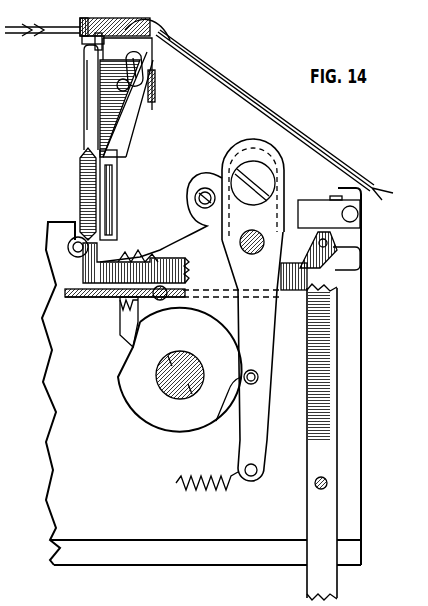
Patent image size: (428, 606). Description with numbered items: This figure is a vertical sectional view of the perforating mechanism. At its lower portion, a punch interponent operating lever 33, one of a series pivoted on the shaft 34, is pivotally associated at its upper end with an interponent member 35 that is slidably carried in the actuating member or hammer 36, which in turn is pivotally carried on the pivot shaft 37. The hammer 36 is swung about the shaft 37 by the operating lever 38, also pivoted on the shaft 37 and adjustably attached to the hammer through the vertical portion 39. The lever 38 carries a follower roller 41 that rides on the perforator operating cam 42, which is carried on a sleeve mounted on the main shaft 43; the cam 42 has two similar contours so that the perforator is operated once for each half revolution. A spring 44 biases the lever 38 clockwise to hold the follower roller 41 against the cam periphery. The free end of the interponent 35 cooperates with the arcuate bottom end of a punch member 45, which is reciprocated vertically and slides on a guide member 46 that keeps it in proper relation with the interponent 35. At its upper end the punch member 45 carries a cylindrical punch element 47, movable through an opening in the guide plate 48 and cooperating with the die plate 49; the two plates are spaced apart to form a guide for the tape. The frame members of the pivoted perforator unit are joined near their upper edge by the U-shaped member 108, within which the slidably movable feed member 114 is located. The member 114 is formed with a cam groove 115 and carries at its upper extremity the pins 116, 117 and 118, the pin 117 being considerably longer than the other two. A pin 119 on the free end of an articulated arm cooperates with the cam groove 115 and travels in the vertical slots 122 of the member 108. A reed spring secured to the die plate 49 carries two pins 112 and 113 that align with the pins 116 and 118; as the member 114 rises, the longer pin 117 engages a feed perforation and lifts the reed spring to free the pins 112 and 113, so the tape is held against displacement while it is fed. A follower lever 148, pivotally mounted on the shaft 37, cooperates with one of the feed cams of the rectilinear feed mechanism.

The punch interponent operating lever 33 is at (314, 515).
The shaft 34 is at (314, 485).
The interponent member 35 is at (90, 273).
The actuating member or hammer 36 is at (80, 300).
The pivot shaft 37 is at (257, 232).
The operating lever 38 is at (262, 433).
The vertical portion 39 is at (268, 173).
The follower roller 41 is at (264, 380).
The perforator operating cam 42 is at (155, 422).
The main shaft 43 is at (158, 387).
The spring 44 is at (200, 488).
The punch member 45 is at (82, 138).
The guide member 46 is at (108, 193).
The cylindrical punch element 47 is at (90, 47).
The guide plate 48 is at (87, 38).
The die plate 49 is at (78, 27).
The U-shaped member 108 is at (185, 100).
The pin 112 is at (157, 27).
The pin 113 is at (162, 36).
The slidably movable member 114 is at (120, 133).
The cam groove 115 is at (162, 104).
The pin 116 is at (97, 52).
The pin 117 is at (156, 88).
The pin 118 is at (155, 42).
The pin 119 is at (128, 92).
The vertical slots 122 is at (87, 97).
The follower lever 148 is at (127, 327).